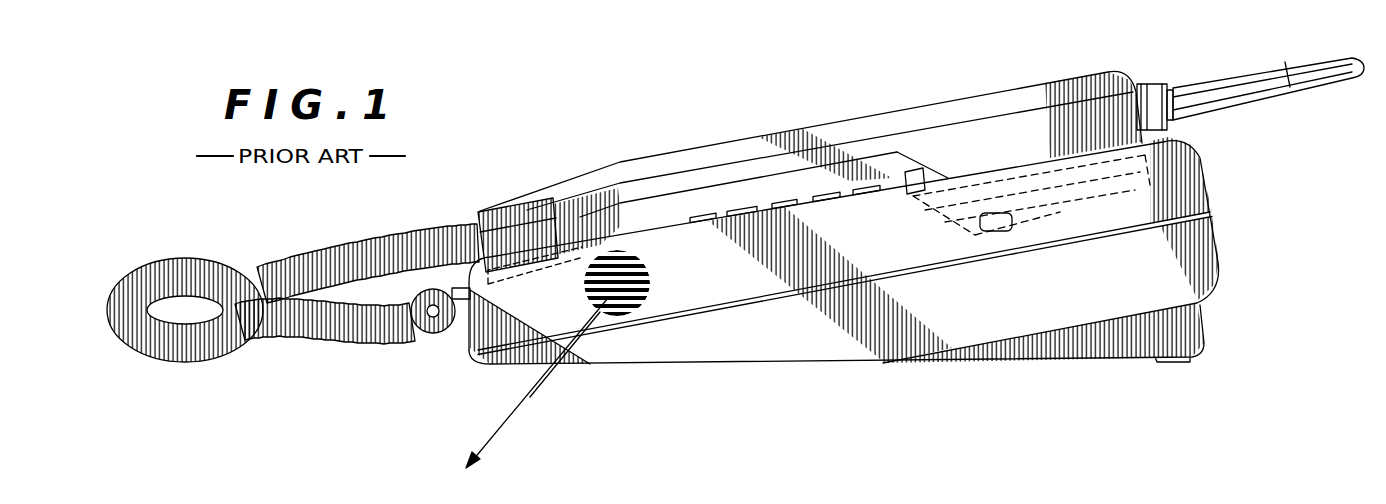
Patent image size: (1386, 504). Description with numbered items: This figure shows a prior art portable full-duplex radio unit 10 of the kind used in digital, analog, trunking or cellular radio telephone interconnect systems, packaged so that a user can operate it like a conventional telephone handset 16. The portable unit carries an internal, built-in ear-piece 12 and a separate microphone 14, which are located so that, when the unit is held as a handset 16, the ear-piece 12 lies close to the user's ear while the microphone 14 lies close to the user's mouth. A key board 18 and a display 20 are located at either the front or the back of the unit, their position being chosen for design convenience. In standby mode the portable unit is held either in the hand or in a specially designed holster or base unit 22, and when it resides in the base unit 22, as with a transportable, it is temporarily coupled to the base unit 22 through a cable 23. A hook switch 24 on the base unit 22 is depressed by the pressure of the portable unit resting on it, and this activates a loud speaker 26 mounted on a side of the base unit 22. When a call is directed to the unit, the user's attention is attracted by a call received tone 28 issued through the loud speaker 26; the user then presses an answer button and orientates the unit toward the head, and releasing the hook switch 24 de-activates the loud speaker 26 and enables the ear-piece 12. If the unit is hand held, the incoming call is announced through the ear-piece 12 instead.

The portable radiotelephone 10 is at (736, 100).
The ear-piece 12 is at (1044, 186).
The microphone 14 is at (584, 222).
The telephone handset 16 is at (710, 157).
The key board 18 is at (790, 206).
The display 20 is at (912, 178).
The base unit 22 is at (821, 336).
The cable 23 is at (368, 335).
The hook switch 24 is at (1000, 232).
The loud speaker 26 is at (632, 304).
The call received tone 28 is at (502, 423).